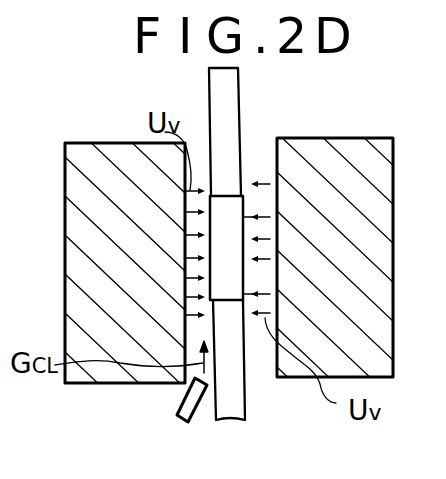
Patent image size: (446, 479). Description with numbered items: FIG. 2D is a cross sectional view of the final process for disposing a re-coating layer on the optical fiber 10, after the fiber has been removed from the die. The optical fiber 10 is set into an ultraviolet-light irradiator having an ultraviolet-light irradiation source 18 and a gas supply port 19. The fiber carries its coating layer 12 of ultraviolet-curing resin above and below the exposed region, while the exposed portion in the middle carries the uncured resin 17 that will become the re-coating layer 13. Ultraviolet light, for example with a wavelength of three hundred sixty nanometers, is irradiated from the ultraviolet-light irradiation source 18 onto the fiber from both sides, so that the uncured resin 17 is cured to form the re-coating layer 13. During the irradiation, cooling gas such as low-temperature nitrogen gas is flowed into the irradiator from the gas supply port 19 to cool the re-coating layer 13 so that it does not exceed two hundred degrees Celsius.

The optical fiber 10 is at (200, 92).
The coating layer 12 is at (228, 90).
The re-coating layer 13 is at (228, 215).
The uncured resin 17 is at (226, 248).
The ultraviolet-light irradiation source 18 is at (95, 280).
The gas supply port 19 is at (192, 399).